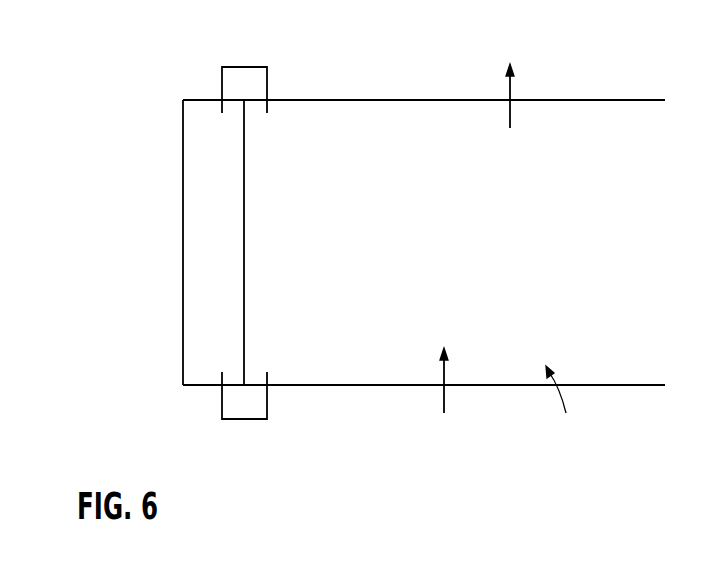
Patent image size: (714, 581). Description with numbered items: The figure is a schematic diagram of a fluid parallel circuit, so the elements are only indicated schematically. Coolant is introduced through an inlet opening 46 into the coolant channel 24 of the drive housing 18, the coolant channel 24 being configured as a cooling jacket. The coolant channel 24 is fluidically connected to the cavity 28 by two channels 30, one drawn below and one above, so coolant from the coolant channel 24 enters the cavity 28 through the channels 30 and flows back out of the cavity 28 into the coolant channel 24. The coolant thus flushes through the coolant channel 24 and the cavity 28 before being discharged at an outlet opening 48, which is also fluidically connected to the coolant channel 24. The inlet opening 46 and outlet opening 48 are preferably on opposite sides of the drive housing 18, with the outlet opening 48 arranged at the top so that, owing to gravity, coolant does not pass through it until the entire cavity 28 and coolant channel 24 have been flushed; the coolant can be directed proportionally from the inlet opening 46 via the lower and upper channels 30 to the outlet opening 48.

The drive housing 18 is at (350, 387).
The coolant channel 24 is at (560, 404).
The cavity 28 is at (205, 347).
The channel 30 is at (241, 66).
The inlet opening 46 is at (446, 400).
The outlet opening 48 is at (513, 92).